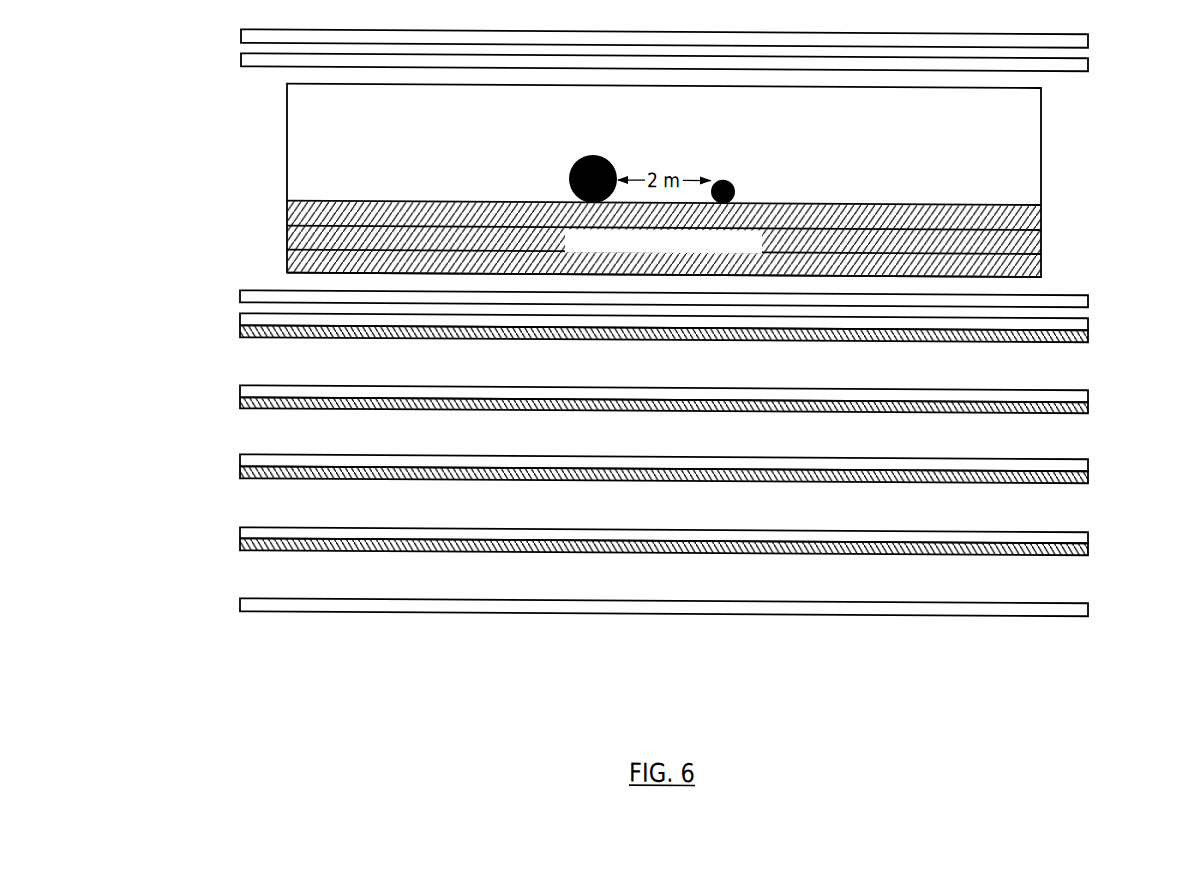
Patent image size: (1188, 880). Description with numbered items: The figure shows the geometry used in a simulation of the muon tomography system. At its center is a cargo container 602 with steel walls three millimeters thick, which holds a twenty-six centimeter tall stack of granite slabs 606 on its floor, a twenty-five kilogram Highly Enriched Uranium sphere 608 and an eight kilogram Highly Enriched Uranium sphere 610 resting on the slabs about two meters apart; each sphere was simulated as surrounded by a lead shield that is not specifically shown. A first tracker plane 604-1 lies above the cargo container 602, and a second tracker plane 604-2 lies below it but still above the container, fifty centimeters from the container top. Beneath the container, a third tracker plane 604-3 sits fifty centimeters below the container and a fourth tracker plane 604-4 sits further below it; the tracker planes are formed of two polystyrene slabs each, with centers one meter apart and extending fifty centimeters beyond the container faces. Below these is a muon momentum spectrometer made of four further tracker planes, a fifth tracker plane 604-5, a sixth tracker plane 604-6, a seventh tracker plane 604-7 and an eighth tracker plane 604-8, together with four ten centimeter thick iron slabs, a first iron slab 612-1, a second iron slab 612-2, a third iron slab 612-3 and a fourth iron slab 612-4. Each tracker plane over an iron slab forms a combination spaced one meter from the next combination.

The cargo container 602 is at (445, 114).
The first tracker plane 604-1 is at (1088, 36).
The second tracker plane 604-2 is at (1088, 58).
The third tracker plane 604-3 is at (1088, 298).
The fourth tracker plane 604-4 is at (1088, 318).
The fifth tracker plane 604-5 is at (240, 390).
The sixth tracker plane 604-6 is at (240, 460).
The seventh tracker plane 604-7 is at (240, 531).
The eighth tracker plane 604-8 is at (240, 603).
The granite slabs 606 is at (568, 246).
The HEU sphere 608 is at (575, 160).
The HEU sphere 610 is at (732, 179).
The first iron slab 612-1 is at (1088, 330).
The second iron slab 612-2 is at (1088, 402).
The third iron slab 612-3 is at (1088, 471).
The fourth iron slab 612-4 is at (1088, 543).